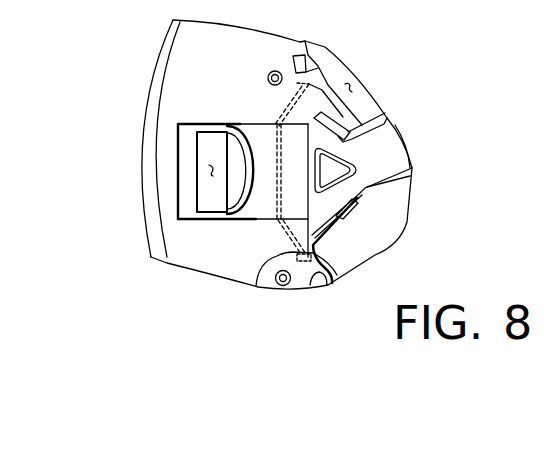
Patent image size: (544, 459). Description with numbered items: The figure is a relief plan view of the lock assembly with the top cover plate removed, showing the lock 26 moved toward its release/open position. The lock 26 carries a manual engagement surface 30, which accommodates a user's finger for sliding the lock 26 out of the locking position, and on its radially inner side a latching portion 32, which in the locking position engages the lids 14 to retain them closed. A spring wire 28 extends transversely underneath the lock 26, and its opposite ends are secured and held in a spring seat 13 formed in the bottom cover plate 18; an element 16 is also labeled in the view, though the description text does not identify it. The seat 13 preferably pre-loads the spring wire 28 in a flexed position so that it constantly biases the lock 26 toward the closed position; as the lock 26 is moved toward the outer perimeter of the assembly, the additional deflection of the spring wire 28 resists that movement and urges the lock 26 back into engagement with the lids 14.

The spring seat 13 is at (270, 262).
The lid 14 is at (362, 88).
The receptacle 16 is at (236, 123).
The bottom cover plate 18 is at (236, 57).
The lock 26 is at (250, 222).
The spring wire 28 is at (282, 182).
The manual engagement surface 30 is at (207, 172).
The latching portion 32 is at (362, 150).